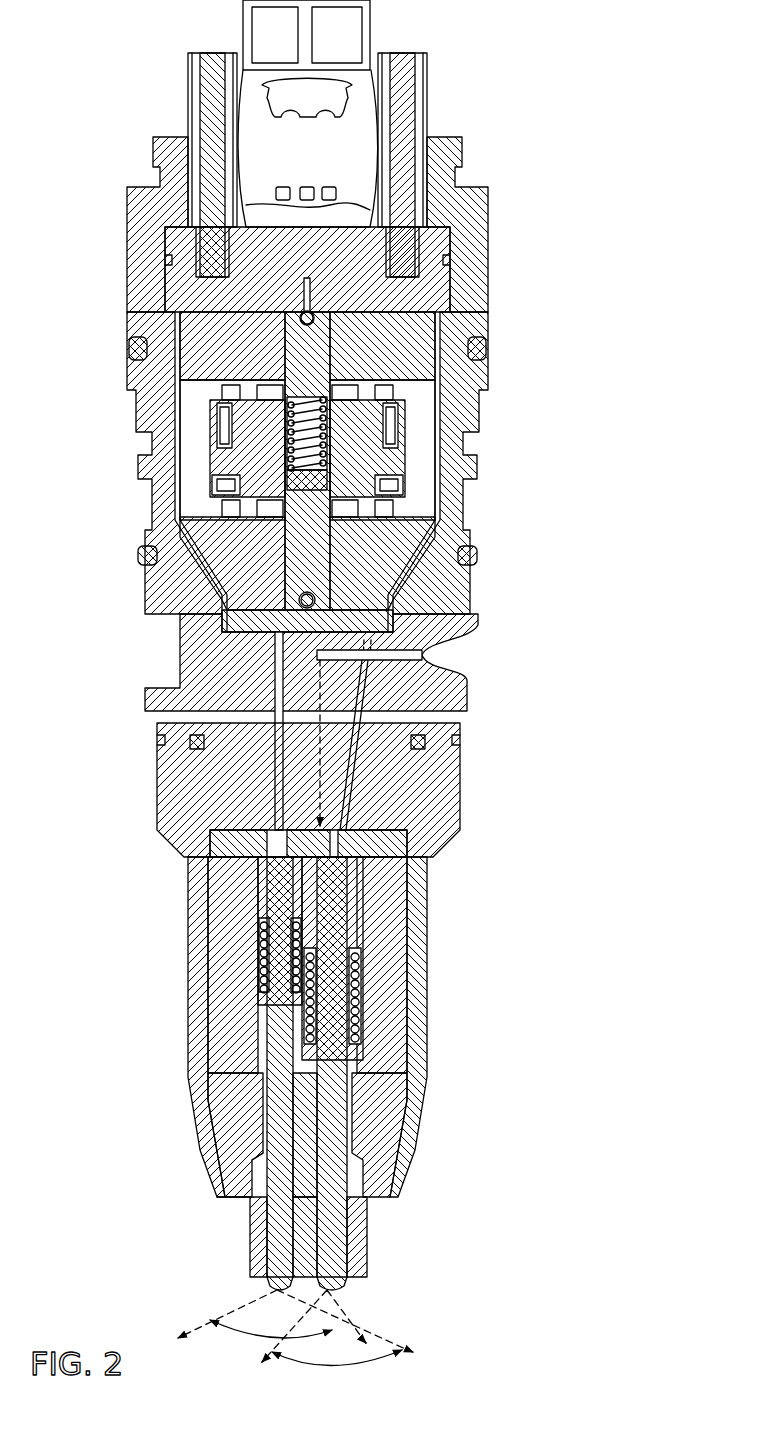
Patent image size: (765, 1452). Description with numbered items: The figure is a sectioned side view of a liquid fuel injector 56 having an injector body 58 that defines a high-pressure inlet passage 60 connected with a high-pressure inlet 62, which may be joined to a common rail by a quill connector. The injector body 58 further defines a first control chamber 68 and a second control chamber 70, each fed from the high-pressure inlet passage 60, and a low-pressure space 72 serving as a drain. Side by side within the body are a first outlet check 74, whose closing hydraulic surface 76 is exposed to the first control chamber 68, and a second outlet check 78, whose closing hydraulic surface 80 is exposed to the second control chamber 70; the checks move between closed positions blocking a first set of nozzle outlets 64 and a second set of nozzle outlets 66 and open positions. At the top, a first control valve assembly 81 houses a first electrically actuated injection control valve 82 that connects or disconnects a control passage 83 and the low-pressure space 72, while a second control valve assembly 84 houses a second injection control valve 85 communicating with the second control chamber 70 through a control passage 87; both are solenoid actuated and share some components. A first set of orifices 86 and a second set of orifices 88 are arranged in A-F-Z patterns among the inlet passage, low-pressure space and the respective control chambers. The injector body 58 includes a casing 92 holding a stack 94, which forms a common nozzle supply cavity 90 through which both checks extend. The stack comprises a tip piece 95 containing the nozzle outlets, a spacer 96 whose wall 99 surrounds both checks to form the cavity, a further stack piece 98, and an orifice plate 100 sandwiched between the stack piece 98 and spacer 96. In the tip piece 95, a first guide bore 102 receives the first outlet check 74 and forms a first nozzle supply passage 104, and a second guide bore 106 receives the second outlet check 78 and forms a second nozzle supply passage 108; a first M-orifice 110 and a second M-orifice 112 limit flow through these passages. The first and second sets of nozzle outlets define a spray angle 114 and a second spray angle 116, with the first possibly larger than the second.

The fuel injector 56 is at (557, 213).
The injector body 58 is at (488, 316).
The high-pressure inlet passage 60 is at (385, 640).
The high-pressure inlet 62 is at (440, 660).
The first set of nozzle outlets 64 is at (270, 1288).
The second set of nozzle outlets 66 is at (345, 1288).
The first control chamber 68 is at (250, 860).
The second control chamber 70 is at (410, 876).
The low-pressure space 72 is at (472, 447).
The first outlet check 74 is at (270, 1040).
The closing hydraulic surface 76 is at (260, 877).
The second outlet check 78 is at (336, 990).
The closing hydraulic surface 80 is at (306, 834).
The first control valve assembly 81 is at (266, 572).
The first electrically actuated injection control valve 82 is at (318, 597).
The control passage 83 is at (300, 656).
The control valve assembly 84 is at (266, 357).
The second electrically actuated injection control valve 85 is at (300, 315).
The first set of orifices 86 is at (247, 826).
The control passage 87 is at (302, 298).
The second set of orifices 88 is at (385, 828).
The common nozzle supply cavity 90 is at (258, 1013).
The casing 92 is at (432, 1025).
The stack 94 is at (412, 1106).
The tip piece 95 is at (225, 1090).
The spacer 96 is at (362, 922).
The stack piece 98 is at (195, 772).
The wall 99 is at (248, 917).
The orifice plate 100 is at (210, 848).
The first guide bore 102 is at (262, 1145).
The first nozzle supply passage 104 is at (266, 1178).
The second guide bore 106 is at (322, 1142).
The second nozzle supply passage 108 is at (316, 1186).
The first M-orifice 110 is at (252, 1150).
The second M-orifice 112 is at (372, 1156).
The spray angle 114 is at (268, 1340).
The second spray angle 116 is at (330, 1370).